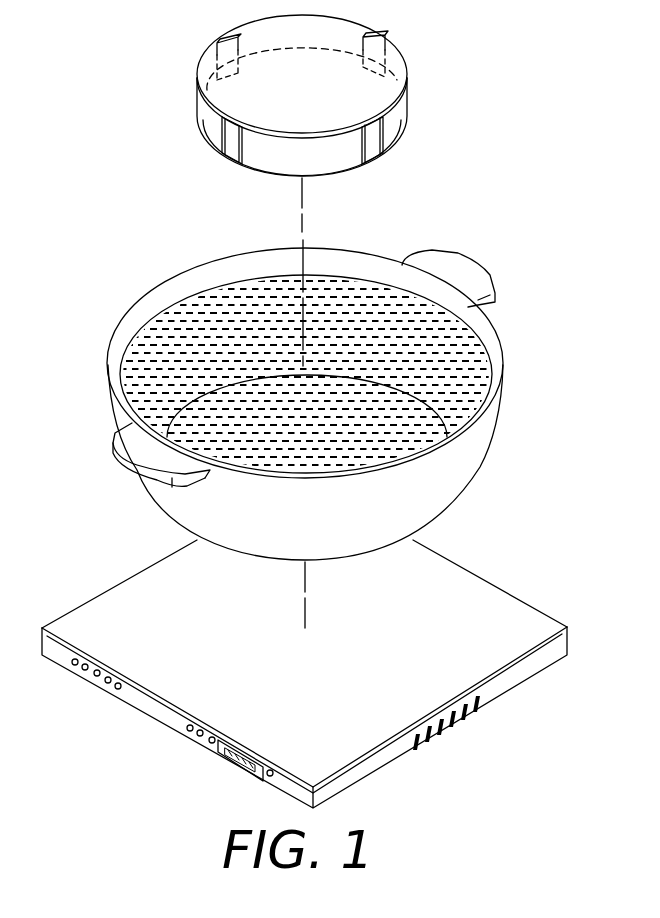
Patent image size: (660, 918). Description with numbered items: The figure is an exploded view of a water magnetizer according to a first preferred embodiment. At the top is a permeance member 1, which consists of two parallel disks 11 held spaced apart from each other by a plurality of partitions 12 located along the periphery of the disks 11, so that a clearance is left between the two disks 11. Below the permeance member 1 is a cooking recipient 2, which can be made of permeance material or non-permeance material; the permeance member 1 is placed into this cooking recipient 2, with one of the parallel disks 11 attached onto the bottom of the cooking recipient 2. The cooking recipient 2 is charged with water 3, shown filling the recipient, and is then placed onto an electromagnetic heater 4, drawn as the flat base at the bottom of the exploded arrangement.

The permeance member 1 is at (353, 95).
The parallel disks 11 is at (402, 70).
The partitions 12 is at (377, 133).
The cooking recipient 2 is at (346, 404).
The water 3 is at (463, 397).
The electromagnetic heater 4 is at (545, 629).